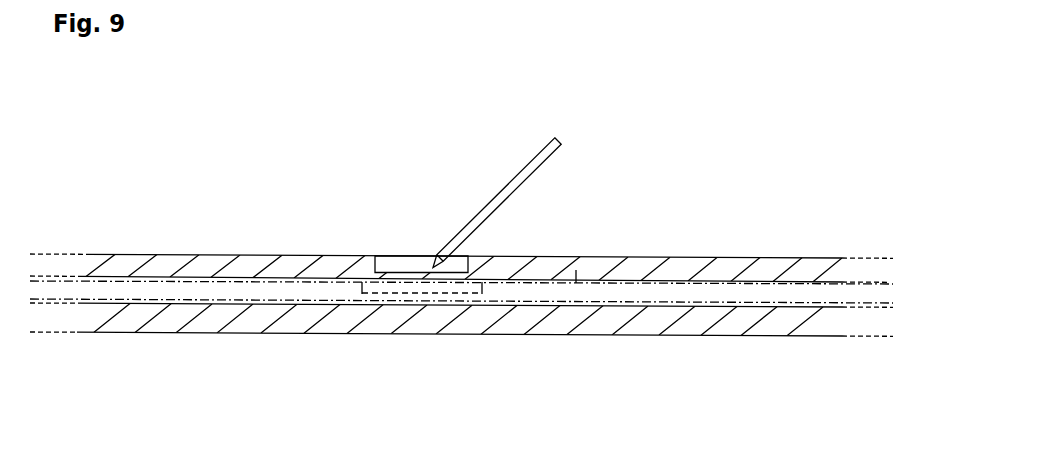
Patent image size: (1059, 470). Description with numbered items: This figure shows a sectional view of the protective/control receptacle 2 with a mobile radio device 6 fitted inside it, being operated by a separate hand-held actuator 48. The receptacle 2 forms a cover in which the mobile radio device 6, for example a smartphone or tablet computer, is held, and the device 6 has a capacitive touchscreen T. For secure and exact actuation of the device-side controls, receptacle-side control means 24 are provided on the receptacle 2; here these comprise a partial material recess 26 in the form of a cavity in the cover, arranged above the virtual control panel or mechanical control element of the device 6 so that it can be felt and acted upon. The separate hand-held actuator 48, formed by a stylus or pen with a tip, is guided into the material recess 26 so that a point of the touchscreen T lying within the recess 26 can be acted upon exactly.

The protective/control receptacle 2 is at (633, 337).
The mobile radio device 6 is at (746, 306).
The receptacle-side control means 24 is at (371, 252).
The material recess 26 is at (393, 262).
The separate hand-held actuator 48 is at (500, 200).
The capacitive touchscreen T is at (577, 282).